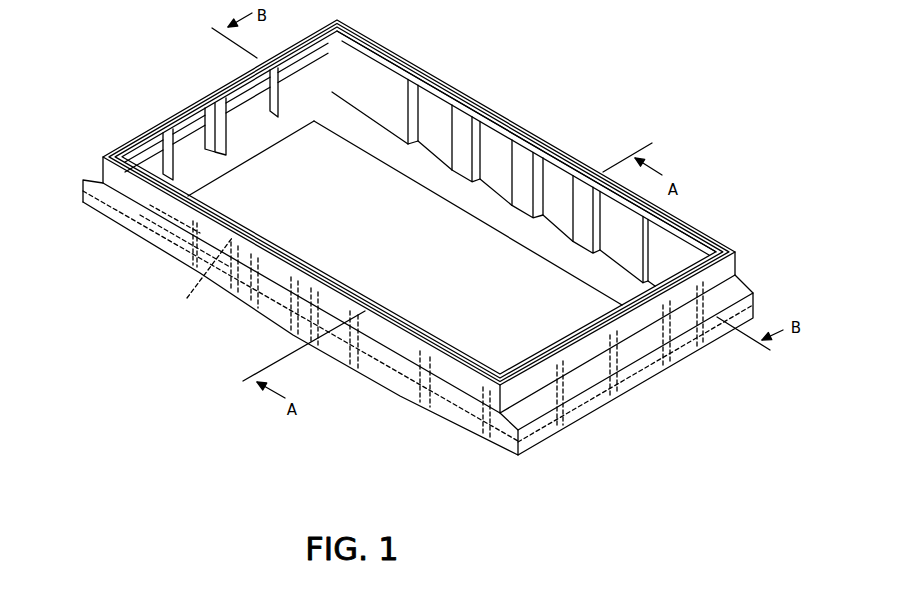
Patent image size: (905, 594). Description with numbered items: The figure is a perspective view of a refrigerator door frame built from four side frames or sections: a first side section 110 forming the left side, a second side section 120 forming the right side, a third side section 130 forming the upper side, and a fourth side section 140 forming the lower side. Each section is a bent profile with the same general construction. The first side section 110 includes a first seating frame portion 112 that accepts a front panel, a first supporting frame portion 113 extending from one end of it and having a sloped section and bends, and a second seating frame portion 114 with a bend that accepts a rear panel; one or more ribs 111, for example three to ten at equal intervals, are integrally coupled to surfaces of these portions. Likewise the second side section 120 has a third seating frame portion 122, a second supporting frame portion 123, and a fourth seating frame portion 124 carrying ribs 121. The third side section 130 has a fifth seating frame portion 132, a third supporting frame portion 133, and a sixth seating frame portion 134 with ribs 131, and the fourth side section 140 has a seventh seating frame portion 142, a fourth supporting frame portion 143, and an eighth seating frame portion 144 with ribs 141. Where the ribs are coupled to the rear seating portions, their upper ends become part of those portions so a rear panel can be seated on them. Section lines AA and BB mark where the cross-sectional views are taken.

The first side section 110 is at (172, 33).
The ribs 111 is at (180, 163).
The first seating frame portion 112 is at (195, 108).
The first supporting frame portion 113 is at (100, 152).
The second seating frame portion 114 is at (220, 83).
The second side section 120 is at (773, 380).
The ribs 121 is at (717, 237).
The third seating frame portion 122 is at (678, 357).
The second supporting frame portion 123 is at (717, 347).
The fourth seating frame portion 124 is at (653, 387).
The third side section 130 is at (400, 7).
The ribs 131 is at (455, 152).
The fifth seating frame portion 132 is at (358, 123).
The third supporting frame portion 133 is at (430, 110).
The sixth seating frame portion 134 is at (457, 100).
The fourth side section 140 is at (83, 277).
The ribs 141 is at (245, 318).
The seventh seating frame portion 142 is at (175, 245).
The fourth supporting frame portion 143 is at (140, 227).
The eighth seating frame portion 144 is at (230, 265).